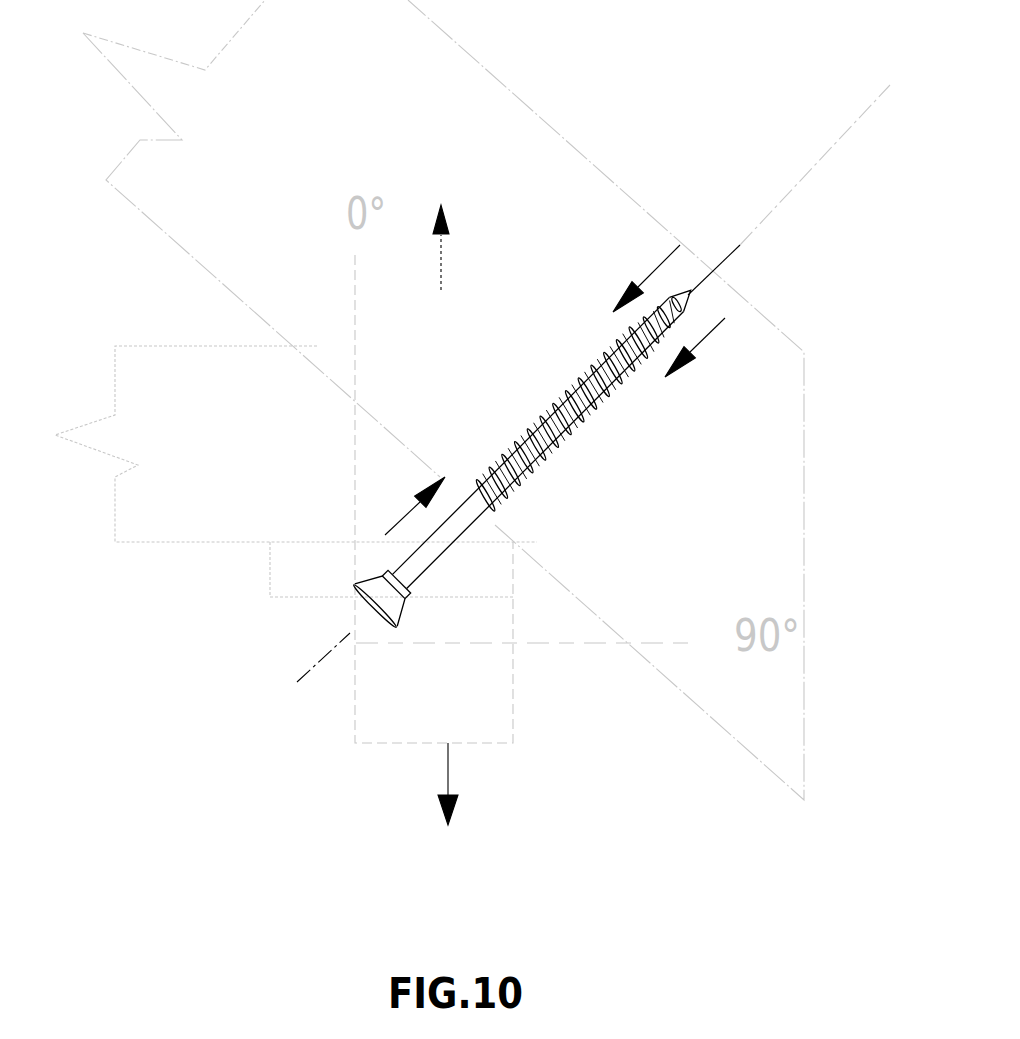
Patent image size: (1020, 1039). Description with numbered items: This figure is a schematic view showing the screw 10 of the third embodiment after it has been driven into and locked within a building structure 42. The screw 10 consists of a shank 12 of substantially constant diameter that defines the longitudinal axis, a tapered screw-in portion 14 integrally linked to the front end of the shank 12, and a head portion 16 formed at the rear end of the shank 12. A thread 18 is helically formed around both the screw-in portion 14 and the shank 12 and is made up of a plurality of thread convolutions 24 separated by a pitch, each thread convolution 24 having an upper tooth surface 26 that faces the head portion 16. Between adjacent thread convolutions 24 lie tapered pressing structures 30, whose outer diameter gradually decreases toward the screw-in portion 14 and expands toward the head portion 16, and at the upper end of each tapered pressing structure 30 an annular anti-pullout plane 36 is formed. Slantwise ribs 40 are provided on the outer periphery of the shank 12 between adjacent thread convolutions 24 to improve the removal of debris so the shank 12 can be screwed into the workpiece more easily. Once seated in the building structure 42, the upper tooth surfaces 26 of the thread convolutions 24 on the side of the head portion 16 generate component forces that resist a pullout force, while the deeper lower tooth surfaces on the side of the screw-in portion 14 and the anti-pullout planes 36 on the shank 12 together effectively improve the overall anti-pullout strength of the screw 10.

The screw 10 is at (603, 496).
The shank 12 is at (408, 582).
The screw-in portion 14 is at (690, 295).
The head portion 16 is at (378, 590).
The thread 18 is at (497, 463).
The thread convolutions 24 is at (533, 427).
The upper tooth surface 26 is at (597, 398).
The tapered pressing structure 30 is at (673, 320).
The annular anti-pullout plane 36 is at (652, 347).
The slantwise ribs 40 is at (585, 377).
The building structure 42 is at (608, 190).